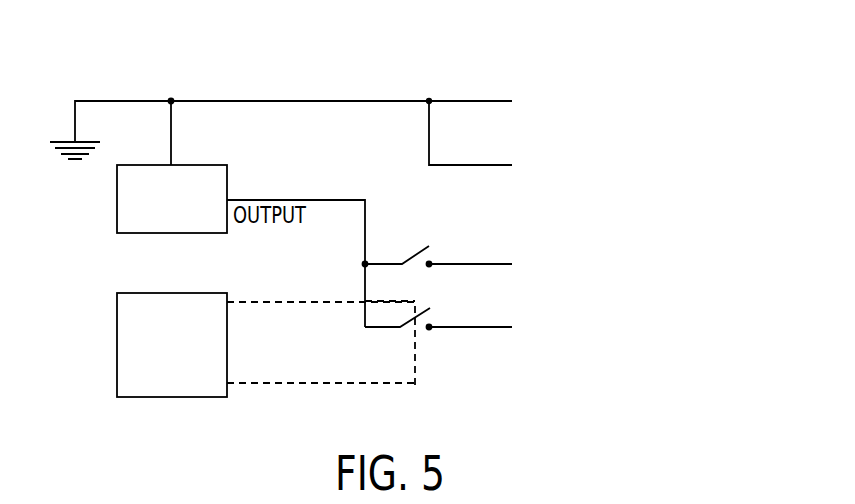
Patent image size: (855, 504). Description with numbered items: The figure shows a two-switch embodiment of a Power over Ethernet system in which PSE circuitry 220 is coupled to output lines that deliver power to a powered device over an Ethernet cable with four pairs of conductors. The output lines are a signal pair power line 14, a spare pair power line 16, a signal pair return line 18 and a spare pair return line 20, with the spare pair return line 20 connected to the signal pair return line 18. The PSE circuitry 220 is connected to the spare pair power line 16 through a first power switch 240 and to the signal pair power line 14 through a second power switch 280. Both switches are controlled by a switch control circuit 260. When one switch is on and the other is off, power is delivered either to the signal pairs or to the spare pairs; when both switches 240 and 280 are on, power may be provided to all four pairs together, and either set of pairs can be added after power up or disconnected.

The signal pair power line 14 is at (505, 264).
The spare pair power line 16 is at (470, 327).
The signal pair return line 18 is at (468, 101).
The spare pair return line 20 is at (468, 165).
The PSE circuitry 220 is at (227, 182).
The first power switch 240 is at (422, 311).
The switch control circuit 260 is at (227, 345).
The second power switch 280 is at (407, 253).